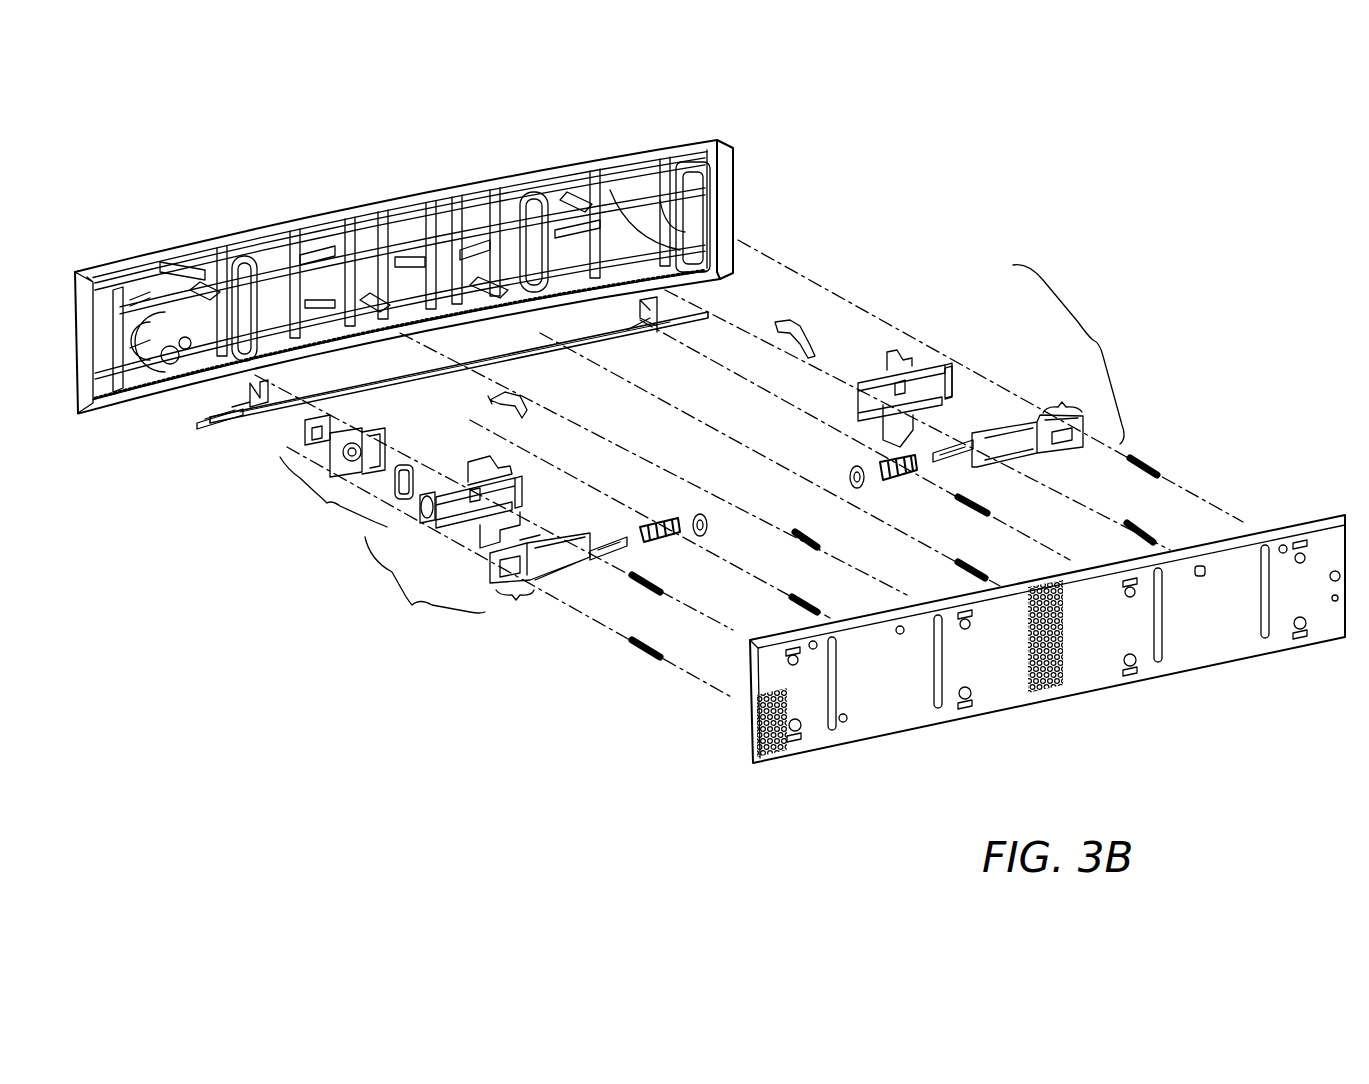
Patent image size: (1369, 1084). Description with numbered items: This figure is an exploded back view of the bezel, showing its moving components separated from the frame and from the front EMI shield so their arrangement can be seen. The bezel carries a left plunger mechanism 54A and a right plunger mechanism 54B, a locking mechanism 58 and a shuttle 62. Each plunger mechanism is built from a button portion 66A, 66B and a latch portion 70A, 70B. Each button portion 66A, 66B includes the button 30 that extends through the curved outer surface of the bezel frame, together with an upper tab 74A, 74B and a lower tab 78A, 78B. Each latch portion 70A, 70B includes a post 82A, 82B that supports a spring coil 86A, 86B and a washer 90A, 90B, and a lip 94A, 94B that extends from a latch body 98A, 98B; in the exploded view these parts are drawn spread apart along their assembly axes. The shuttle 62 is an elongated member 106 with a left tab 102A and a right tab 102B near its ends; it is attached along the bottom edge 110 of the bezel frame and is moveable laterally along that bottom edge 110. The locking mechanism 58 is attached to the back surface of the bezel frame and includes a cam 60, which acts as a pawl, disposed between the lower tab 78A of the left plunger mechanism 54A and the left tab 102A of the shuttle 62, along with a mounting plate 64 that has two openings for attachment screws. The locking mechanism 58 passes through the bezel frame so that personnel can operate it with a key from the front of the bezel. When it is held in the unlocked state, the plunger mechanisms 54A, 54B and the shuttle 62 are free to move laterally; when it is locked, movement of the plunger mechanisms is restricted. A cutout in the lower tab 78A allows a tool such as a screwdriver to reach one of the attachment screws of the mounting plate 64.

The button 30 is at (426, 520).
The left plunger mechanism 54A is at (425, 591).
The right plunger mechanism 54B is at (1068, 354).
The locking mechanism 58 is at (333, 501).
The cam 60 is at (410, 466).
The shuttle 62 is at (197, 427).
The mounting plate 64 is at (355, 425).
The button portion 66A is at (460, 532).
The button portion 66B is at (950, 352).
The latch portion 70A is at (552, 588).
The latch portion 70B is at (1040, 462).
The upper tab 74A is at (500, 468).
The upper tab 74B is at (907, 366).
The lower tab 78A is at (518, 528).
The lower tab 78B is at (903, 422).
The post 82A is at (612, 546).
The post 82B is at (958, 463).
The spring coil 86A is at (660, 525).
The spring coil 86B is at (896, 480).
The washer 90A is at (705, 520).
The washer 90B is at (940, 458).
The lip 94A is at (517, 606).
The lip 94B is at (1062, 395).
The latch body 98A is at (576, 560).
The latch body 98B is at (1010, 445).
The left tab 102A is at (260, 412).
The right tab 102B is at (645, 328).
The elongated member 106 is at (459, 367).
The bottom edge 110 is at (148, 418).